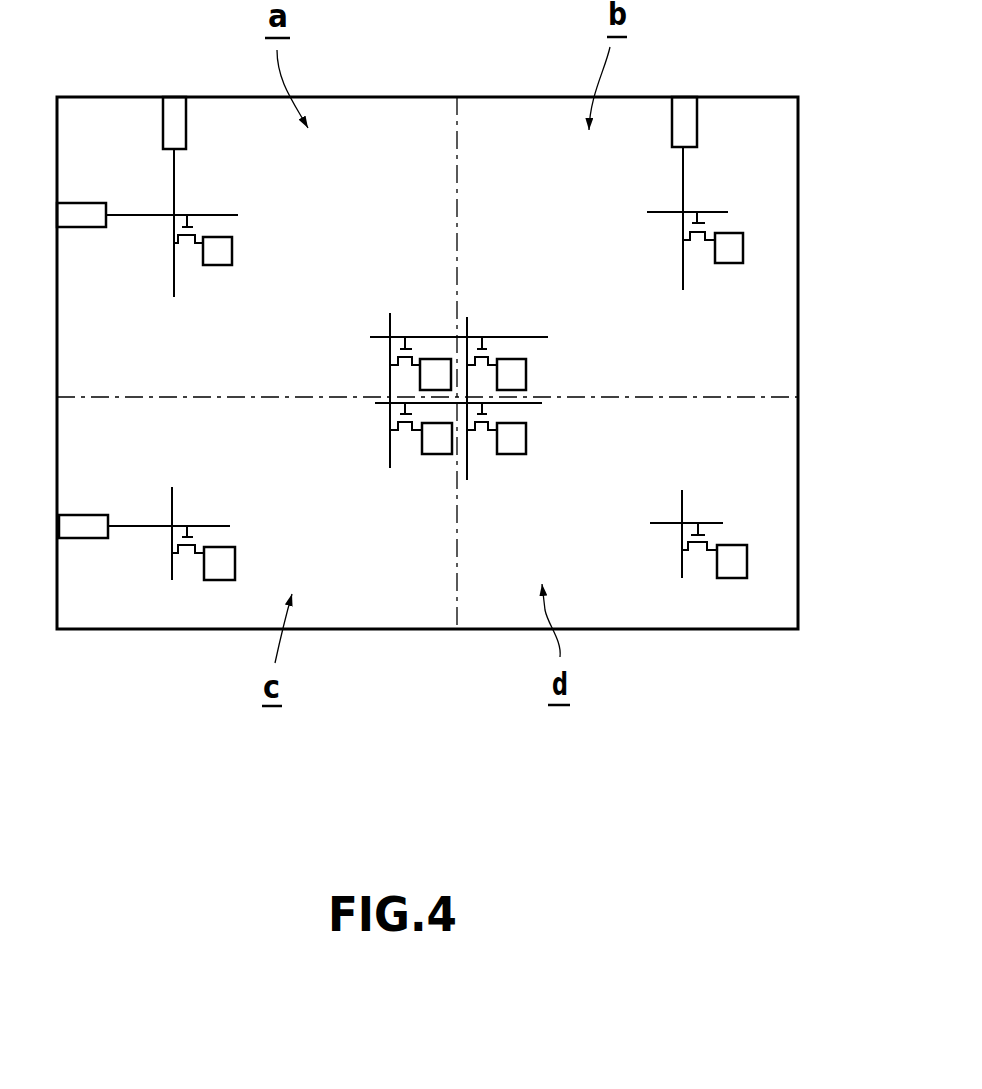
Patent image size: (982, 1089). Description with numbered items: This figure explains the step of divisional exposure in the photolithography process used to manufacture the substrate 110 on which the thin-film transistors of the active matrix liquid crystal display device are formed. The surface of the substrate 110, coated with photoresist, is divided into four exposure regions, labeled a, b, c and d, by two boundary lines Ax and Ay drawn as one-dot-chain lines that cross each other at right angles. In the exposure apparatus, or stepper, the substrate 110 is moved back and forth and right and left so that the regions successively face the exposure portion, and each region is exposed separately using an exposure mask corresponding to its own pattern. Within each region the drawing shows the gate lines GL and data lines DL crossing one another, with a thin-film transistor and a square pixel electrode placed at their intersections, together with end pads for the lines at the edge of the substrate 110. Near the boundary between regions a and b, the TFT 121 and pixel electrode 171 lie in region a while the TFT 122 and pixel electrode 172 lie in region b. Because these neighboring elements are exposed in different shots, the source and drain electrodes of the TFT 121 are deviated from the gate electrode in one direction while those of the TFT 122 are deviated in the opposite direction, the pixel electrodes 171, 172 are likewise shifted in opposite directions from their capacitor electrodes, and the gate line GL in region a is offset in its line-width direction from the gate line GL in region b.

The substrate 110 is at (392, 133).
The TFT 121 is at (188, 248).
The TFT 122 is at (720, 223).
The pixel electrode 171 is at (218, 255).
The pixel electrode 172 is at (733, 252).
The gate line GL is at (420, 337).
The data line DL is at (468, 322).
The boundary line Ax is at (263, 399).
The boundary line Ay is at (458, 188).